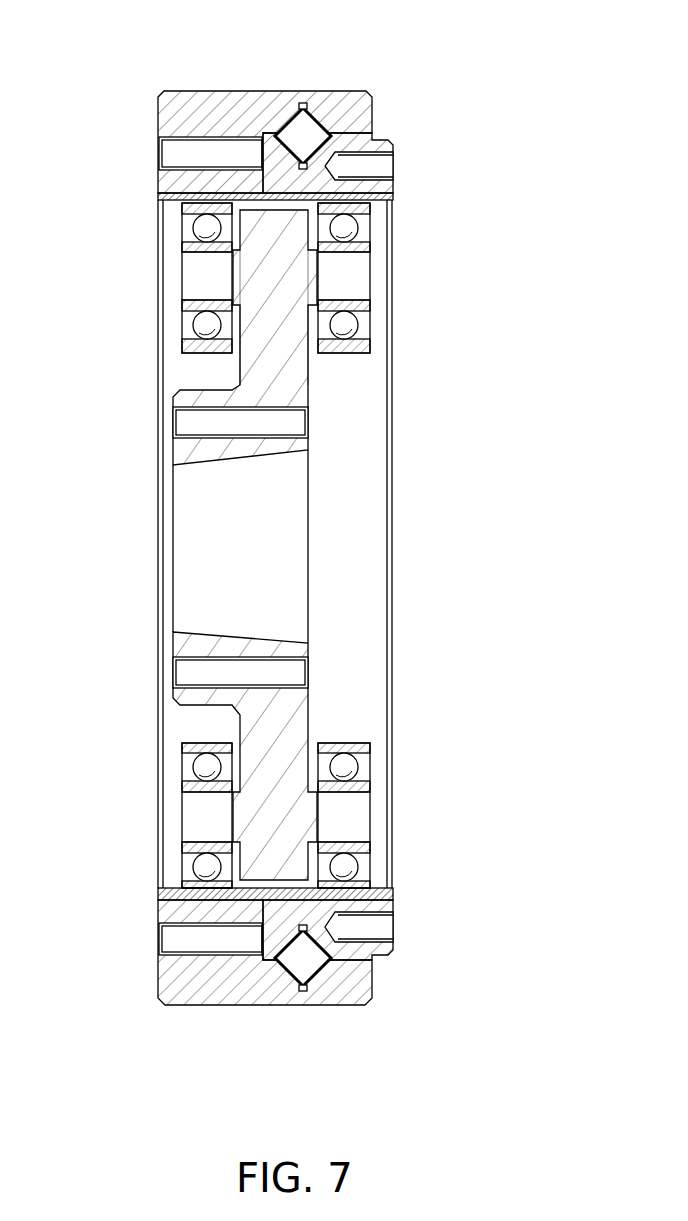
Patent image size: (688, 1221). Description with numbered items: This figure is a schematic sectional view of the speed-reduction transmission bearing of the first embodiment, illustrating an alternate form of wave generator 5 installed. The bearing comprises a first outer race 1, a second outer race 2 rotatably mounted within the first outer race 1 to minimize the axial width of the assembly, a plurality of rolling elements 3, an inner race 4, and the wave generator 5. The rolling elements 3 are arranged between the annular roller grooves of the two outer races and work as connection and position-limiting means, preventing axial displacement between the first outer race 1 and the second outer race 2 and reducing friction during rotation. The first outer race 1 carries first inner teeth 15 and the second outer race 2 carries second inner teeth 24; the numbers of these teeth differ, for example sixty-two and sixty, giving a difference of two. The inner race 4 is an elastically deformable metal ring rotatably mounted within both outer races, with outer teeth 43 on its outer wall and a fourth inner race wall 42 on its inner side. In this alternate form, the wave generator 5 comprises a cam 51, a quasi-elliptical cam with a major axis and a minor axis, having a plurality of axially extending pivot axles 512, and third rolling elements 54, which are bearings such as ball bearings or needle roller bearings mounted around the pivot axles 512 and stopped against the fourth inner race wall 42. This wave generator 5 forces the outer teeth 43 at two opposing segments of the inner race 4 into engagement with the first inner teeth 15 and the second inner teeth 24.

The first outer race 1 is at (178, 1000).
The second outer race 2 is at (378, 960).
The rolling elements 3 is at (302, 128).
The inner race 4 is at (158, 905).
The wave generator 5 is at (308, 447).
The first inner teeth 15 is at (160, 940).
The second inner teeth 24 is at (393, 895).
The fourth inner race wall 42 is at (170, 890).
The outer teeth 43 is at (375, 865).
The cam 51 is at (293, 373).
The pivot axles 512 is at (355, 273).
The third rolling elements 54 is at (183, 232).